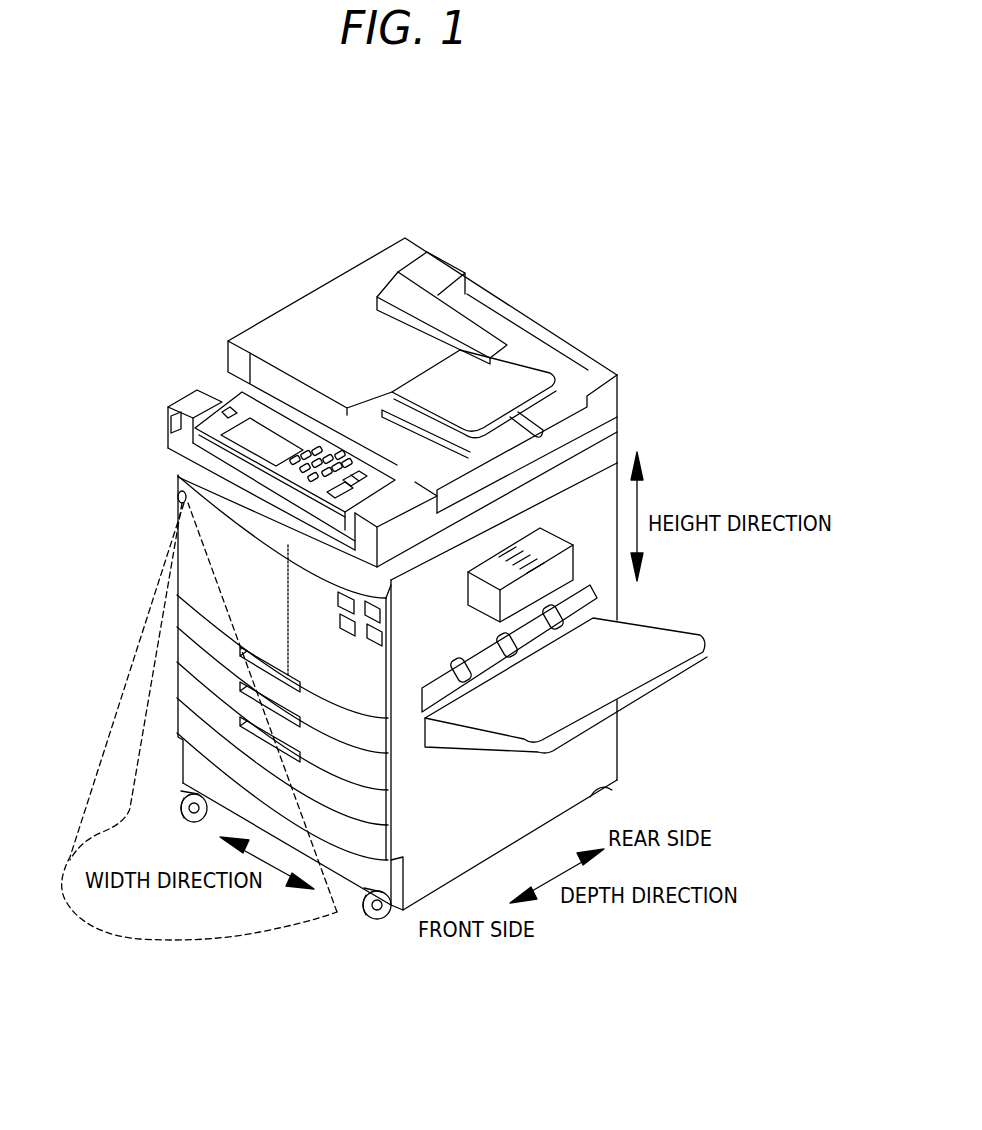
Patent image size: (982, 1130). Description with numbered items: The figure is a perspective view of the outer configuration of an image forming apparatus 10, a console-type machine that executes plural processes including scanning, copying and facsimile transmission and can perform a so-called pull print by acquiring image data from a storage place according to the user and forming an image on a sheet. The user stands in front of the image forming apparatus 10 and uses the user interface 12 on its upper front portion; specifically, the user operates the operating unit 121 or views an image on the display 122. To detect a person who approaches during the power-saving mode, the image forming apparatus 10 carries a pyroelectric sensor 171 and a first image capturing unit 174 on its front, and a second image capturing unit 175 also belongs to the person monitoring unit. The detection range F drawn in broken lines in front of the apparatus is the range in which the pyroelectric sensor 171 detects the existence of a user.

The image forming apparatus 10 is at (537, 316).
The user interface 12 is at (231, 339).
The operating unit 121 is at (305, 450).
The display 122 is at (250, 418).
The pyroelectric sensor 171 is at (178, 495).
The first image capturing unit 174 is at (170, 424).
The second image capturing unit 175 is at (222, 414).
The detection range F is at (132, 932).